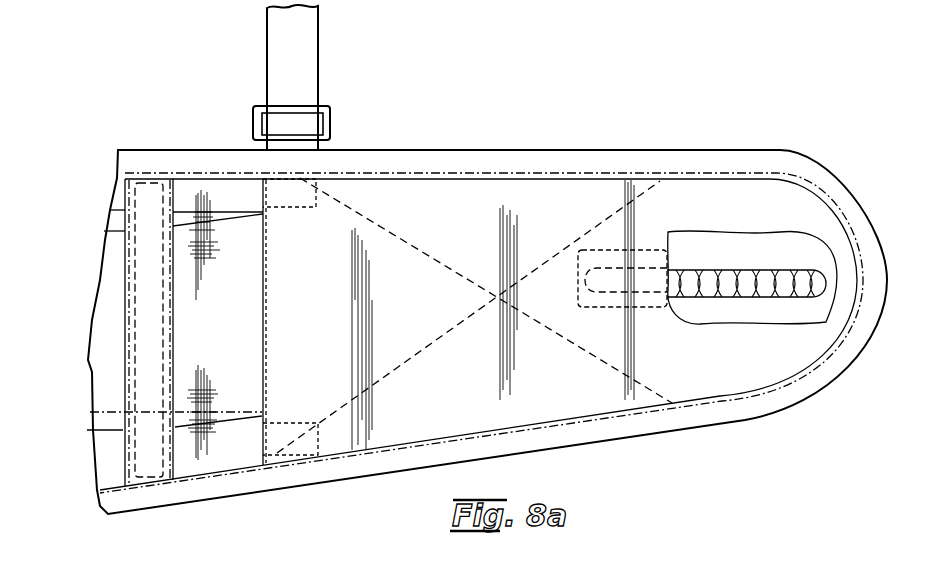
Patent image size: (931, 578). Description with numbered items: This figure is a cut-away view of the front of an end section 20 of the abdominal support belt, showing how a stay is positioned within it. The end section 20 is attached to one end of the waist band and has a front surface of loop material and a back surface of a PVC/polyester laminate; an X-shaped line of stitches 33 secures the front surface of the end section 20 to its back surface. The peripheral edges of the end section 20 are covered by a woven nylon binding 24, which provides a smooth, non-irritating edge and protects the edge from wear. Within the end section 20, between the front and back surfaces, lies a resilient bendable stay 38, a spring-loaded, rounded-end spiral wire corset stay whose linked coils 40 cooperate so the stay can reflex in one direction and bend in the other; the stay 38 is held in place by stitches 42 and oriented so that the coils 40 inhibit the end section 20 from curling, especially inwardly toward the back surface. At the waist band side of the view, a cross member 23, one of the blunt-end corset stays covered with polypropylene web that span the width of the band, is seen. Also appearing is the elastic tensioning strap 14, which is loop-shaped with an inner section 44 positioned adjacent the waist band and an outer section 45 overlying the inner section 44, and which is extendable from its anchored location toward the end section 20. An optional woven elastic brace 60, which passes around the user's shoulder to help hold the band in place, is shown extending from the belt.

The tensioning strap 14 is at (223, 208).
The end section 20 is at (615, 151).
The cross member 23 is at (152, 480).
The binding 24 is at (480, 153).
The X-shaped line of stitches 33 is at (400, 368).
The resilient bendable stay 38 is at (603, 277).
The linked coils 40 is at (738, 297).
The stitches 42 is at (622, 307).
The inner section 44 is at (102, 260).
The outer section 45 is at (113, 210).
The brace 60 is at (303, 68).